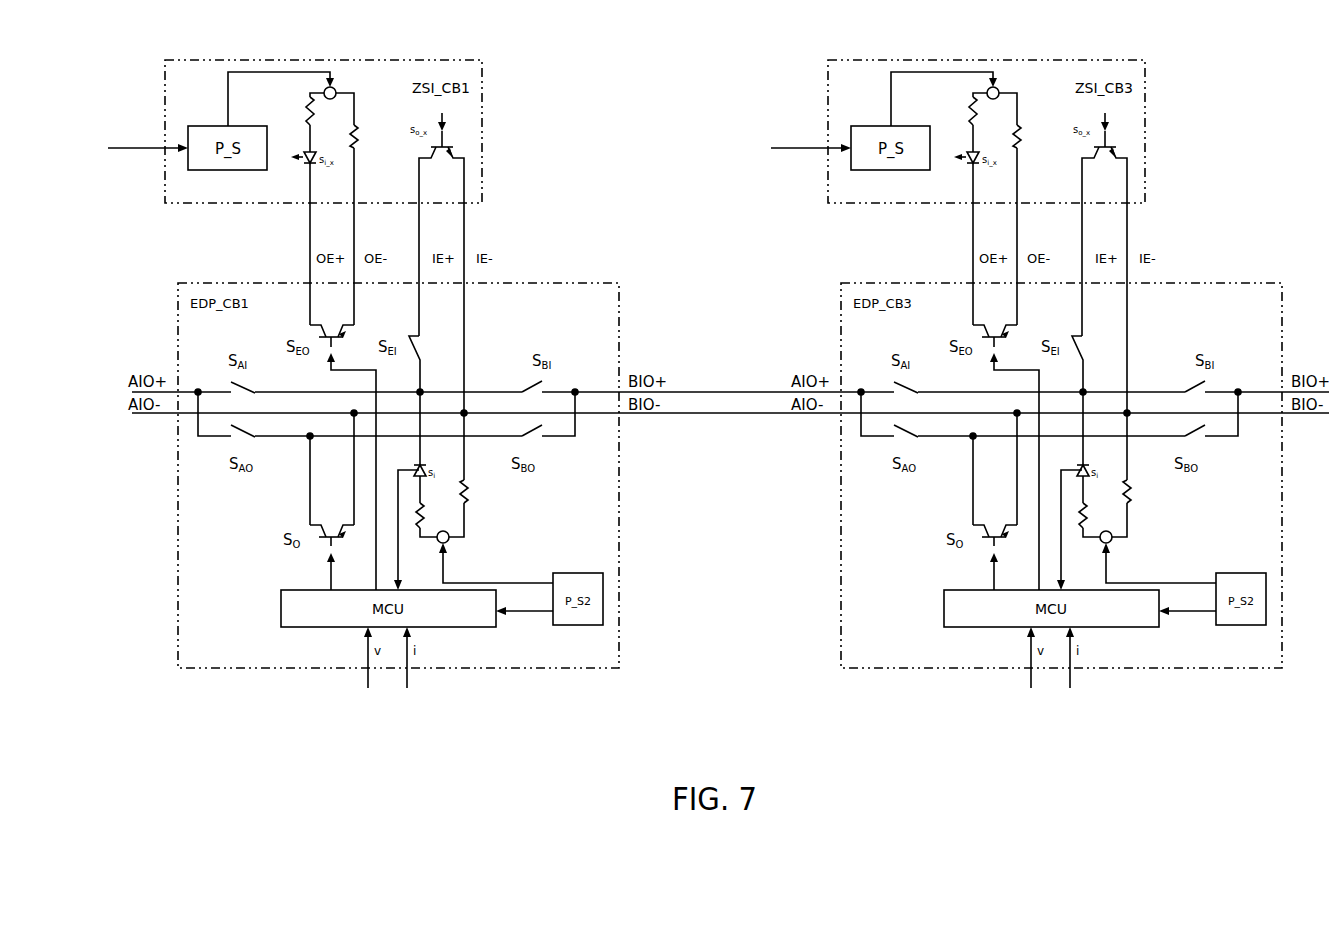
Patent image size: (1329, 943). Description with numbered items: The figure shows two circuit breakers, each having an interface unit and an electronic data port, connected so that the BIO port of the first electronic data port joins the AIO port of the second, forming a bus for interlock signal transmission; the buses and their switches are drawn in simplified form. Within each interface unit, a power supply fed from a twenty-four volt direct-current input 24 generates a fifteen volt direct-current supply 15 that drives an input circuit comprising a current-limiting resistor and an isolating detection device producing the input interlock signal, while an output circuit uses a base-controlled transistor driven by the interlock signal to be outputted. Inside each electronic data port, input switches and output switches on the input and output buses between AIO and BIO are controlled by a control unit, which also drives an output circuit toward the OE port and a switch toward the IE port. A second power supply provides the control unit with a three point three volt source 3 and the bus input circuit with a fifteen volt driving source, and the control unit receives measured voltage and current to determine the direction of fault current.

The 24 Vdc power supply input to P_S 24 is at (479, 141).
The 15 Vdc supply lines from P_S and P_S2 15 is at (722, 327).
The 3.3 Vdc supply from P_S2 to MCU 3 is at (856, 606).